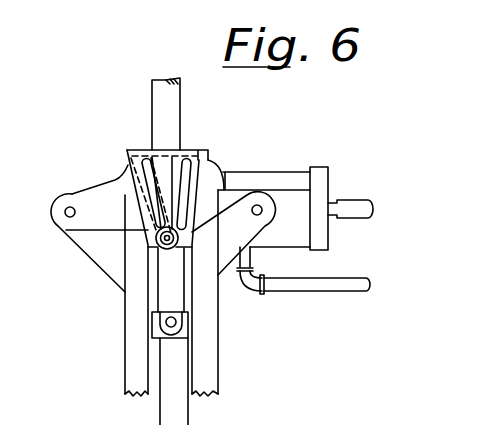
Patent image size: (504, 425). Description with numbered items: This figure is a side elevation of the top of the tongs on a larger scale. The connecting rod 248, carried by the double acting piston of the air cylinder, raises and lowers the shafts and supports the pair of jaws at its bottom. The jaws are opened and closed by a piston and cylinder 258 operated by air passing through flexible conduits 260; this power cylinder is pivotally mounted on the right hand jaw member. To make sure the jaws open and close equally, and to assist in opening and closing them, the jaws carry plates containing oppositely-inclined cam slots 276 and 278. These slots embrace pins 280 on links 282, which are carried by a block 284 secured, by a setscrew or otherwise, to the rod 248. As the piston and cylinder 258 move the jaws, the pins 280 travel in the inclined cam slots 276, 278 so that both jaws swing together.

The connecting rod 248 is at (167, 100).
The piston and cylinder 258 is at (289, 178).
The flexible conduits 260 is at (362, 210).
The cam slot 276 is at (182, 180).
The cam slot 278 is at (145, 170).
The pin 280 is at (160, 240).
The link 282 is at (170, 284).
The block 284 is at (157, 329).